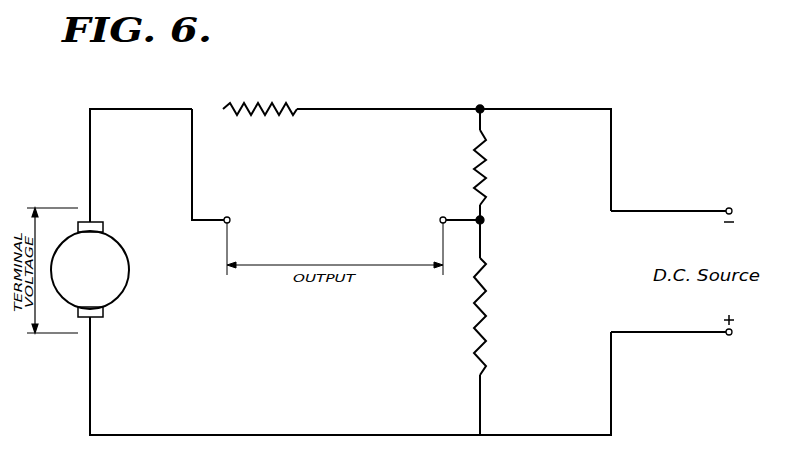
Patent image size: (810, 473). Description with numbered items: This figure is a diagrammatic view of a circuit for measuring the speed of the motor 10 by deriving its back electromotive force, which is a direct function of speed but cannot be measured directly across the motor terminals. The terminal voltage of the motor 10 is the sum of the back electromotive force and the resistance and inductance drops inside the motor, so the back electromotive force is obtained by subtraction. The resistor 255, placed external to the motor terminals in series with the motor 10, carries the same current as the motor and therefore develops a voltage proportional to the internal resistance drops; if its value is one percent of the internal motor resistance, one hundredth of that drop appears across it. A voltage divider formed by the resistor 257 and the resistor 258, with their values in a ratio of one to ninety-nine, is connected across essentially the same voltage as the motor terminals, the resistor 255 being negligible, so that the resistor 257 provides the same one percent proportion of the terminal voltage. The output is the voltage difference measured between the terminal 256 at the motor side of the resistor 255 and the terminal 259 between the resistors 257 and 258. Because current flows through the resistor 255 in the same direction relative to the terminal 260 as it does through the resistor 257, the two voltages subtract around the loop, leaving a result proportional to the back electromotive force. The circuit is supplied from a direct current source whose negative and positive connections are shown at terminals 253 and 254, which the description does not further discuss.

The motor 10 is at (122, 293).
The negative terminal of D.C. source 253 is at (747, 196).
The positive terminal of D.C. source 254 is at (733, 332).
The resistor 255 is at (258, 103).
The terminal 256 is at (227, 217).
The resistor 257 is at (476, 176).
The resistor 258 is at (477, 329).
The terminal 259 is at (438, 220).
The terminal 260 is at (480, 107).